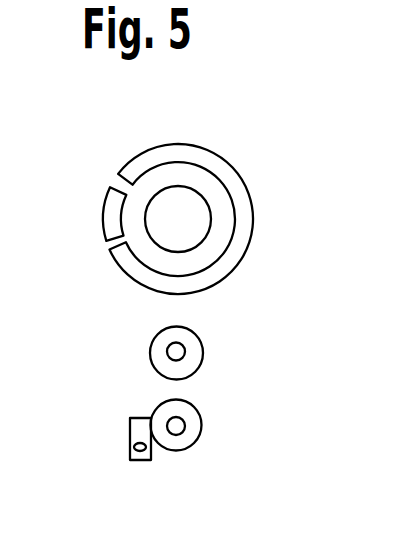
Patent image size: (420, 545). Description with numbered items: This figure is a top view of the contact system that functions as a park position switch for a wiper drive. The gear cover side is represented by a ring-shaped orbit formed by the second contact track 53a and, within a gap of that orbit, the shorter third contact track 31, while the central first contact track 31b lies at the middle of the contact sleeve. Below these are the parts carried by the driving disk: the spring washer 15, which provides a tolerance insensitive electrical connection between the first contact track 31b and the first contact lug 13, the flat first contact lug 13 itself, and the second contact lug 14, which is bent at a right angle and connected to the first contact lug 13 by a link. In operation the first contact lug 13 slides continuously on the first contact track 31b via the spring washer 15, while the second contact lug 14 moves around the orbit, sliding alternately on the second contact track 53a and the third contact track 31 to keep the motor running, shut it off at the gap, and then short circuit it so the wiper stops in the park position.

The second contact track 53a is at (130, 262).
The third contact track 31 is at (112, 217).
The first contact track 31b is at (160, 202).
The spring washer 15 is at (158, 352).
The first contact lug 13 is at (197, 425).
The second contact lug 14 is at (140, 440).